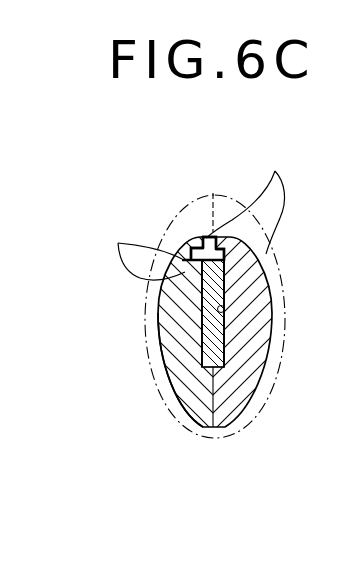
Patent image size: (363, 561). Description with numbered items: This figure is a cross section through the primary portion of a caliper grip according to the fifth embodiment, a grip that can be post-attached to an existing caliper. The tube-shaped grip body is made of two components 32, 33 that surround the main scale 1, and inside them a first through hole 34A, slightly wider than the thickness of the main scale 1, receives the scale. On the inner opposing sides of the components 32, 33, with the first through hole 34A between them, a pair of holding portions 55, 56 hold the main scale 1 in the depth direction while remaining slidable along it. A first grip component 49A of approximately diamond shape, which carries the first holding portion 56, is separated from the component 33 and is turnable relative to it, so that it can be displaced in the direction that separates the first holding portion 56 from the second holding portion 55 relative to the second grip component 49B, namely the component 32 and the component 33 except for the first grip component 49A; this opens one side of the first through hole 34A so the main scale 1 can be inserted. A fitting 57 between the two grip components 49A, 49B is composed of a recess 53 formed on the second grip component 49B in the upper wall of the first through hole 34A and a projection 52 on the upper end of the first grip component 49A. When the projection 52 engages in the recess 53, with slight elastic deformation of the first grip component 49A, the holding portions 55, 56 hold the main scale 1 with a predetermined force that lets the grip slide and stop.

The main scale 1 is at (215, 370).
The component 32 is at (255, 372).
The component 33 is at (135, 254).
The first through hole 34A is at (226, 318).
The first grip component 49A is at (177, 377).
The second grip component 49B is at (256, 192).
The projection 52 is at (196, 242).
The recess 53 is at (207, 238).
The second holding portion 55 is at (225, 283).
The first holding portion 56 is at (200, 297).
The fitting 57 is at (133, 128).